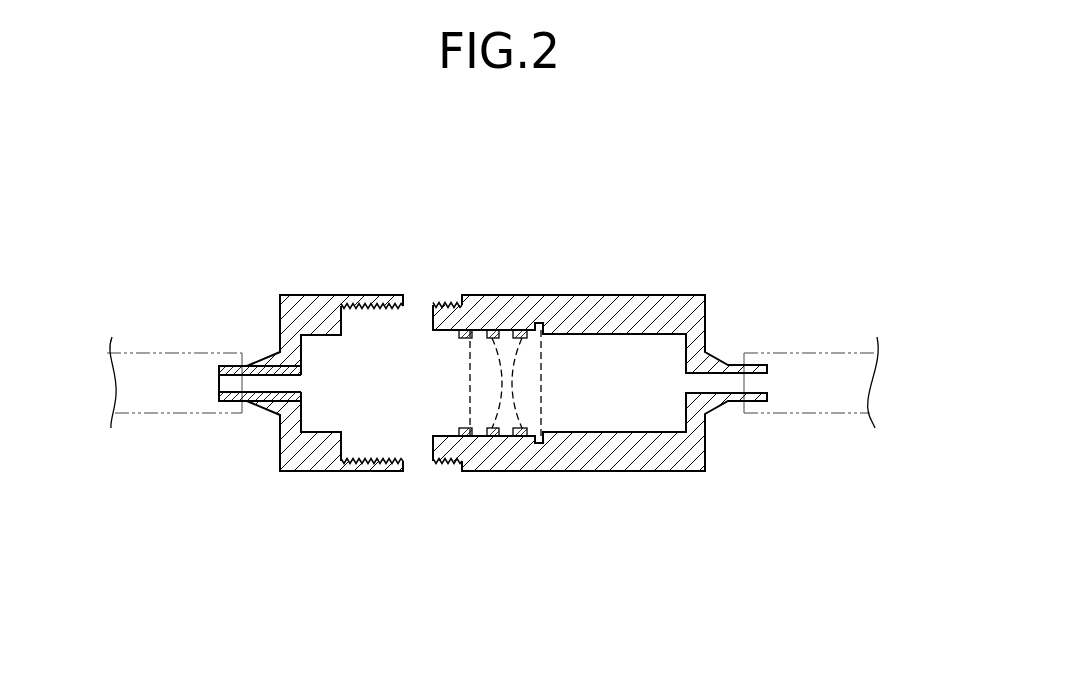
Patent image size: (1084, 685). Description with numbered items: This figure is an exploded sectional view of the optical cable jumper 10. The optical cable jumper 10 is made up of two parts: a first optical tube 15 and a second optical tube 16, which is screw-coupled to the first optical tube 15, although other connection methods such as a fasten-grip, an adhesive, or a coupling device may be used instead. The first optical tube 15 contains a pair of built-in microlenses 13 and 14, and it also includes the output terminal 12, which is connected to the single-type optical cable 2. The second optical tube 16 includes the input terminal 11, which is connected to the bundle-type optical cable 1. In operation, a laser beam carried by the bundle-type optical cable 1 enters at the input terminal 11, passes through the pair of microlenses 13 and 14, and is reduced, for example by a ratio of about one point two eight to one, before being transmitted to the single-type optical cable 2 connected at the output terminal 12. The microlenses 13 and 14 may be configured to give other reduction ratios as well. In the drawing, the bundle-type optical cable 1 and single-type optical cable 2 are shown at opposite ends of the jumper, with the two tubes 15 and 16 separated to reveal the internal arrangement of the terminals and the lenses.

The bundle-type optical cable 1 is at (174, 350).
The single-type optical cable 2 is at (813, 350).
The optical cable jumper 10 is at (737, 265).
The input terminal 11 is at (233, 387).
The output terminal 12 is at (757, 386).
The microlens 13 is at (480, 386).
The microlens 14 is at (535, 386).
The first optical tube 15 is at (660, 457).
The second optical tube 16 is at (307, 457).